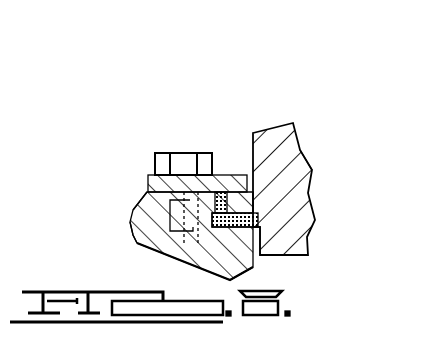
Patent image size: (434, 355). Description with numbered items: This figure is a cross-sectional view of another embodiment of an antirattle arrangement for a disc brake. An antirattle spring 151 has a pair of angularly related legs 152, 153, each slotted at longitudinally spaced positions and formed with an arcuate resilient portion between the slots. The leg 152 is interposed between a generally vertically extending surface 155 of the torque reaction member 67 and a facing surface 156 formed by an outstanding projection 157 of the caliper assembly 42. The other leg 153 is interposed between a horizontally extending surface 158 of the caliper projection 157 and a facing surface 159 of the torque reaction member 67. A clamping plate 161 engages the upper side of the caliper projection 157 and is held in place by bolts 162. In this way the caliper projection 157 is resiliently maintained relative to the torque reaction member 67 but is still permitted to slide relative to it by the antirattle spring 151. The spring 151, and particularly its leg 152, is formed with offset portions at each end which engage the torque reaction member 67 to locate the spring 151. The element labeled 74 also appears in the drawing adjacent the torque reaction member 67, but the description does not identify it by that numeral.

The caliper assembly 42 is at (286, 123).
The torque reaction member 67 is at (128, 225).
The workpiece body edge 74 is at (147, 203).
The antirattle spring 151 is at (142, 244).
The leg 152 is at (222, 190).
The leg 153 is at (263, 230).
The vertically extending surface 155 is at (212, 222).
The facing surface 156 is at (230, 202).
The outstanding projection 157 is at (302, 160).
The horizontally extending surface 158 is at (262, 220).
The facing surface 159 is at (257, 262).
The clamping plate 161 is at (147, 185).
The bolts 162 is at (178, 153).